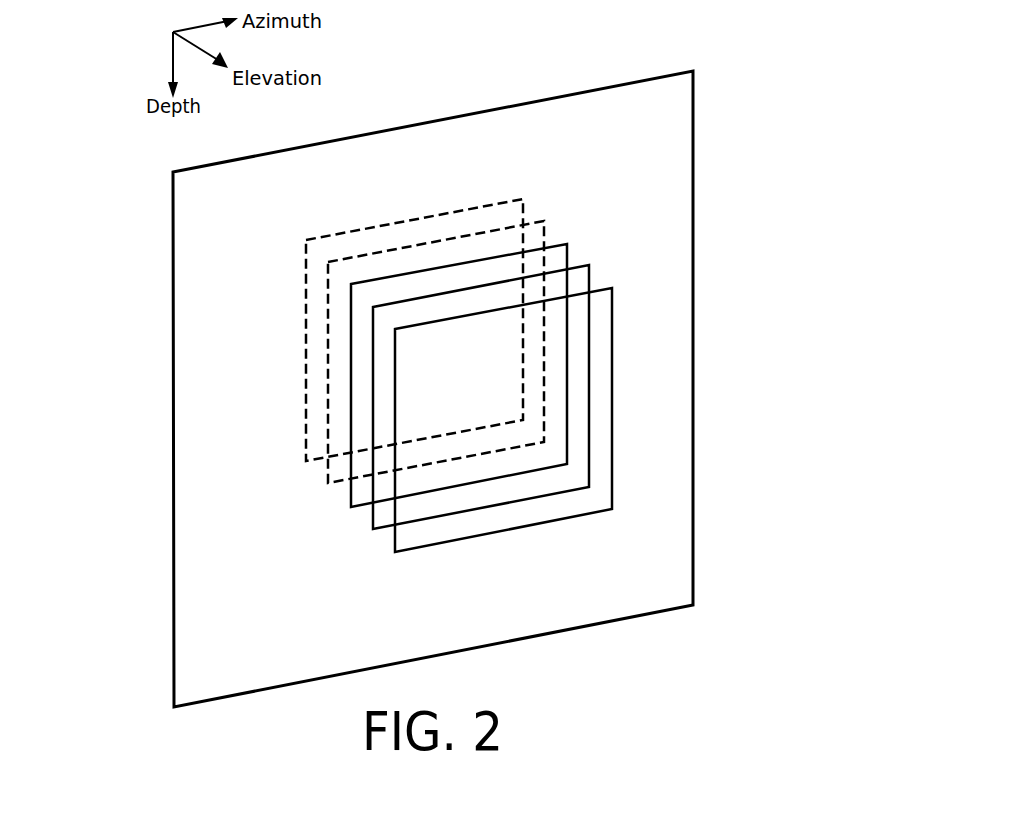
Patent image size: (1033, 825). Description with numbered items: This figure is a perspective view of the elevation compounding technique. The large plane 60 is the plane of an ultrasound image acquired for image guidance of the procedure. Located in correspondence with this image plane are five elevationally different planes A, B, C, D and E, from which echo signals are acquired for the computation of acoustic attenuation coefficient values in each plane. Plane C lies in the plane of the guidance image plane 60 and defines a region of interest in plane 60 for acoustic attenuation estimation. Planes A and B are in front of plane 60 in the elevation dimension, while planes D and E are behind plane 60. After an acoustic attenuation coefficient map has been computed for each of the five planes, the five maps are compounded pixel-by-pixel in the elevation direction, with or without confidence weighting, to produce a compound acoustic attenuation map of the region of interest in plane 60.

The plane 60 is at (445, 117).
The plane A is at (605, 301).
The plane B is at (583, 278).
The plane C is at (560, 256).
The plane D is at (538, 233).
The plane E is at (518, 210).